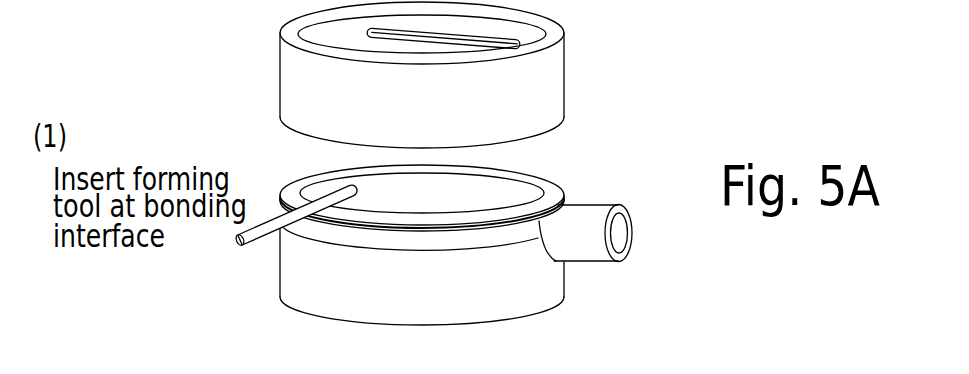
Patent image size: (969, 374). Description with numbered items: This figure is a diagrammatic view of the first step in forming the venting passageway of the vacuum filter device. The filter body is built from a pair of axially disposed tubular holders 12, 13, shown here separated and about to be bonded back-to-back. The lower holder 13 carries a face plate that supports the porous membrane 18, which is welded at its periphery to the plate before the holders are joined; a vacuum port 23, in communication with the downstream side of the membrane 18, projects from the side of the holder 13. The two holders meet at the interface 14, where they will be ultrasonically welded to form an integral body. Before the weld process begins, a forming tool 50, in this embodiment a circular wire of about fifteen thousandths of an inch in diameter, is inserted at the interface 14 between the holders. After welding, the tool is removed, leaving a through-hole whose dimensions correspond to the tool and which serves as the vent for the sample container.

The tubular holder 12 is at (550, 62).
The tubular holder 13 is at (513, 318).
The interface 14 is at (560, 201).
The porous membrane 18 is at (492, 193).
The vacuum port 23 is at (582, 263).
The forming tool 50 is at (247, 240).